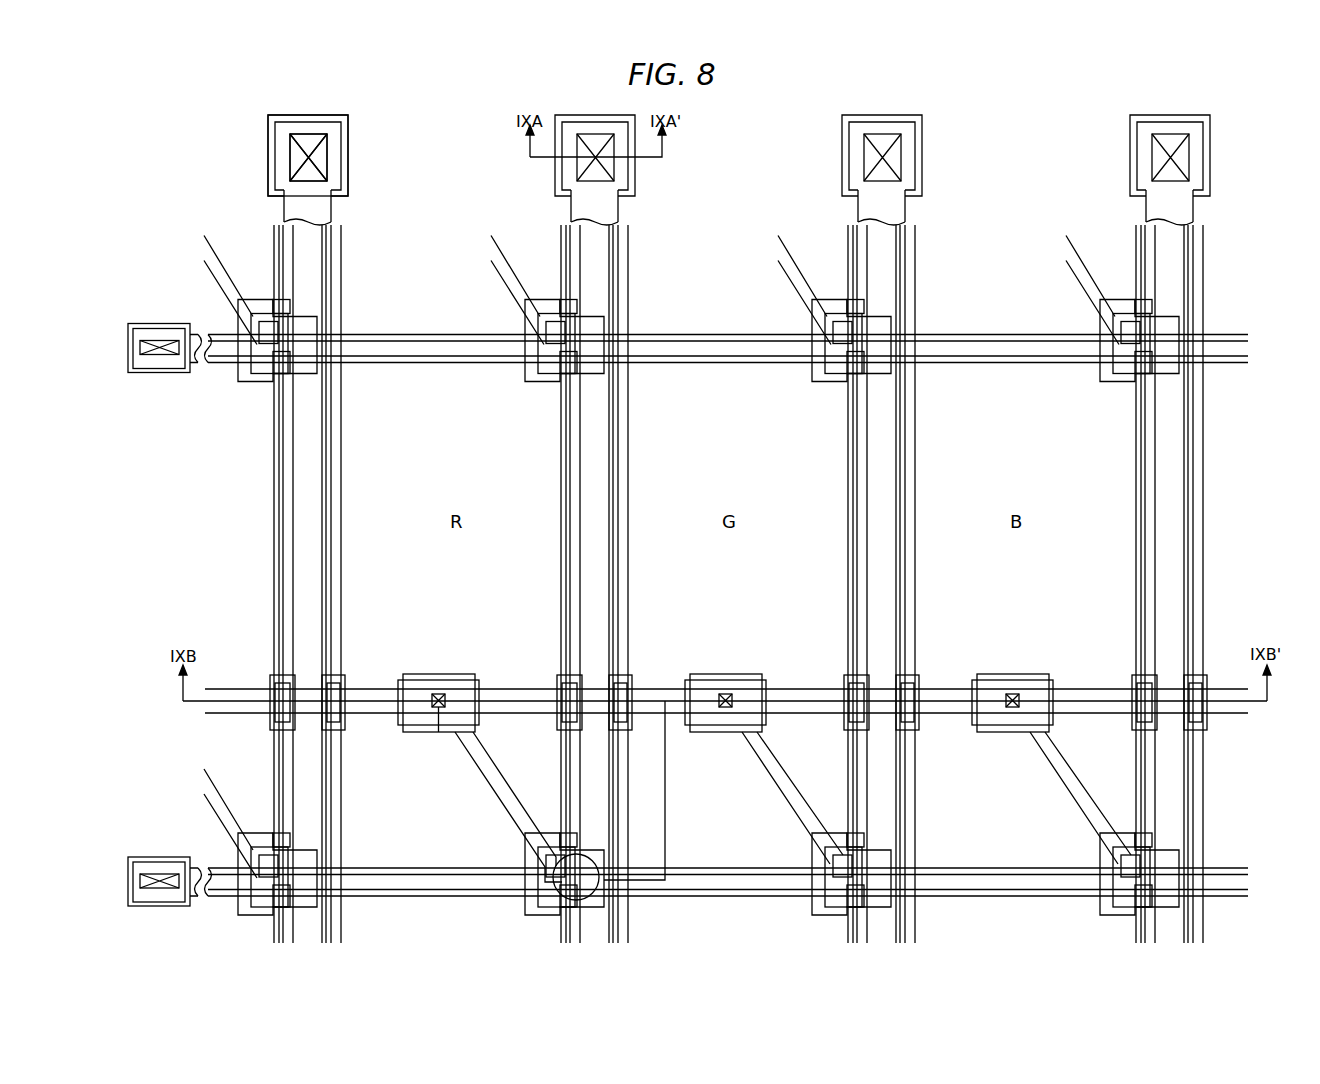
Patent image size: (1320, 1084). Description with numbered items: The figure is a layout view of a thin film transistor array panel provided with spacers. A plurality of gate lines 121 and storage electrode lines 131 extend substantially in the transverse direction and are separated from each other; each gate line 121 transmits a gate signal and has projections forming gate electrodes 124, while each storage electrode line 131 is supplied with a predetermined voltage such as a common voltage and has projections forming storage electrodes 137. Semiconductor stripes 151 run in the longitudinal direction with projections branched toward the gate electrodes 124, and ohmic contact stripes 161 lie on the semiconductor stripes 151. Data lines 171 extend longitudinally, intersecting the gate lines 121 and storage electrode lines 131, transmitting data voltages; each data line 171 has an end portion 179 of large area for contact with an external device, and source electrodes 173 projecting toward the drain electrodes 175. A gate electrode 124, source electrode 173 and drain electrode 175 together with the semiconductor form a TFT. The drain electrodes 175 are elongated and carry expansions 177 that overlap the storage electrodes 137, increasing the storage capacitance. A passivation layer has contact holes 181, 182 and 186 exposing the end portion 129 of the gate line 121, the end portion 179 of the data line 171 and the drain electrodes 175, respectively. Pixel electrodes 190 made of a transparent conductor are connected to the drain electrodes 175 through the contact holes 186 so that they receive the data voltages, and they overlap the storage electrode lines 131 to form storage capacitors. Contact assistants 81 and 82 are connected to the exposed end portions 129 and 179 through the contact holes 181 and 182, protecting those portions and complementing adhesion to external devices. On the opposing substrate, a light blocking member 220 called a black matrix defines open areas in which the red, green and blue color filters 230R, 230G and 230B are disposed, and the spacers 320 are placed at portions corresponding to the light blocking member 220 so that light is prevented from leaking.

The contact assistant 81 is at (167, 340).
The contact assistant 82 is at (349, 156).
The gate line 121 is at (406, 333).
The gate electrode 124 is at (535, 378).
The end portion of gate line 129 is at (148, 323).
The storage electrode line 131 is at (656, 688).
The storage electrode 137 is at (472, 674).
The semiconductor stripe 151 is at (548, 308).
The ohmic contact stripe 161 is at (328, 421).
The data line 171 is at (285, 444).
The source electrode 173 is at (556, 378).
The drain electrode 175 is at (512, 797).
The expansion of drain electrode 177 is at (410, 674).
The end portion of data line 179 is at (268, 158).
The contact hole 181 is at (152, 372).
The contact hole 182 is at (310, 134).
The contact hole 186 is at (445, 693).
The pixel electrode 190 is at (322, 484).
The light blocking member 220 is at (343, 276).
The red color filter 230R is at (343, 559).
The green color filter 230G is at (630, 559).
The blue color filter 230B is at (917, 559).
The spacer 320 is at (590, 862).